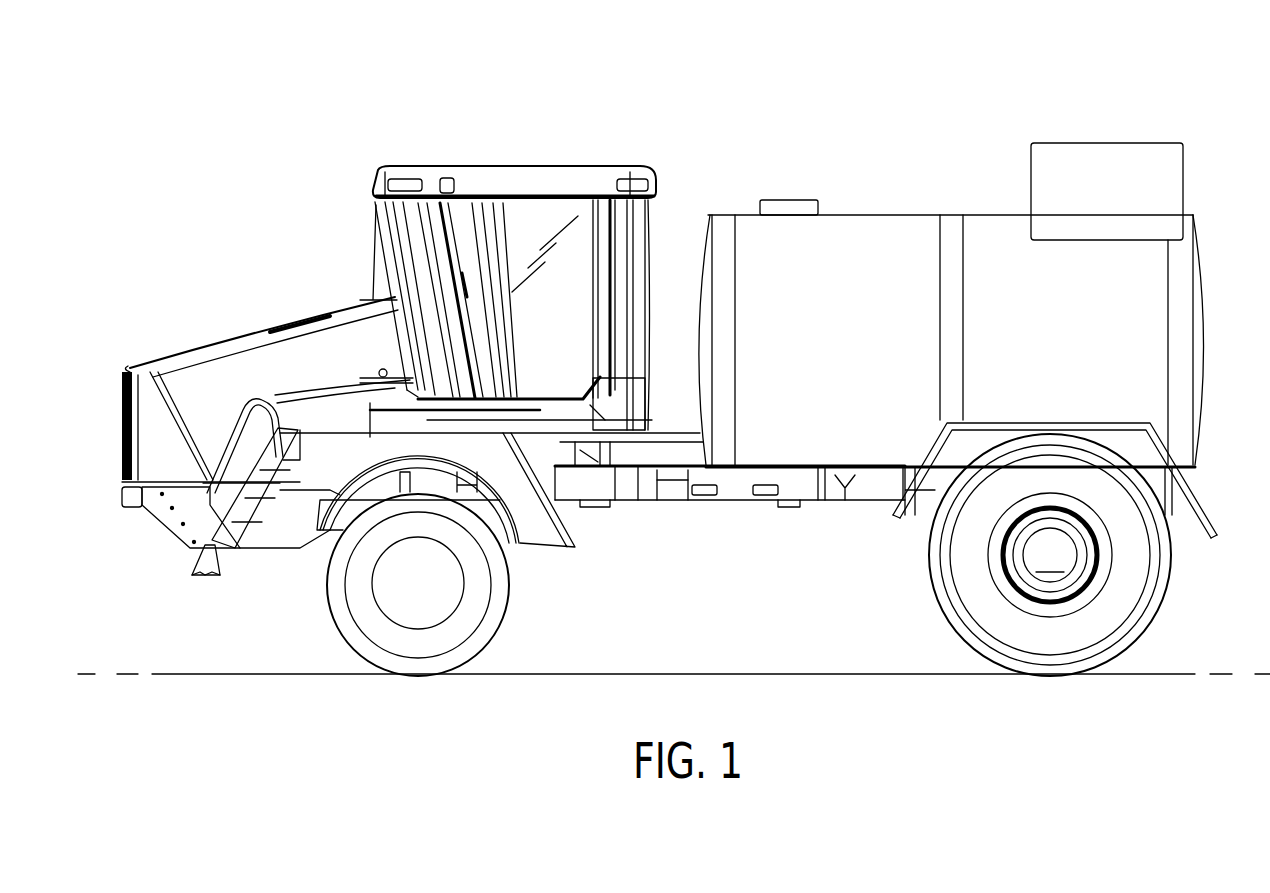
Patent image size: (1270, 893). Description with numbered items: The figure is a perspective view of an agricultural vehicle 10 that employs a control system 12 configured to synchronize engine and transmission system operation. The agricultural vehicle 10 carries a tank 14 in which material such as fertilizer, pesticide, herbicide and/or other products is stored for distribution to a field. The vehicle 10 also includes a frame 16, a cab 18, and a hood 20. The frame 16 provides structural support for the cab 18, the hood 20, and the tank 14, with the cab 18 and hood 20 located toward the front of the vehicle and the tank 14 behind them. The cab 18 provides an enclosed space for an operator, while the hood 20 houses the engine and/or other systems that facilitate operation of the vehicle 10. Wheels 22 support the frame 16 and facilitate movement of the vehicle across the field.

The agricultural vehicle 10 is at (207, 139).
The control system 12 is at (279, 580).
The tank 14 is at (918, 214).
The frame 16 is at (742, 503).
The cab 18 is at (478, 165).
The hood 20 is at (271, 322).
The wheels 22 is at (506, 617).